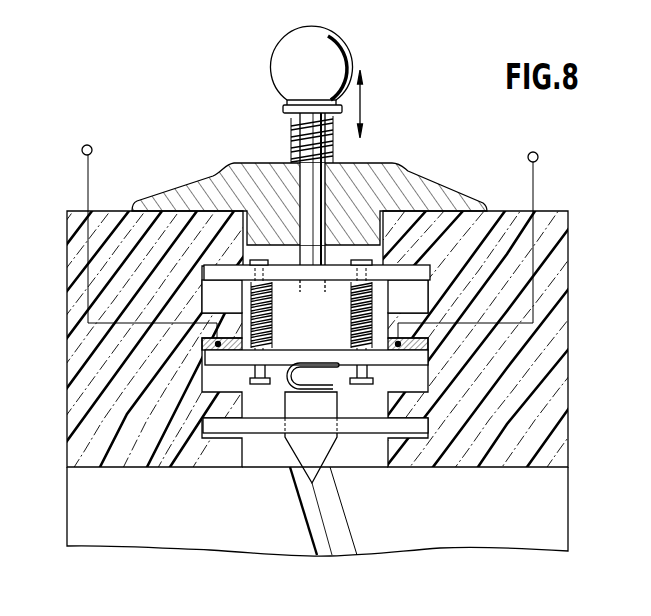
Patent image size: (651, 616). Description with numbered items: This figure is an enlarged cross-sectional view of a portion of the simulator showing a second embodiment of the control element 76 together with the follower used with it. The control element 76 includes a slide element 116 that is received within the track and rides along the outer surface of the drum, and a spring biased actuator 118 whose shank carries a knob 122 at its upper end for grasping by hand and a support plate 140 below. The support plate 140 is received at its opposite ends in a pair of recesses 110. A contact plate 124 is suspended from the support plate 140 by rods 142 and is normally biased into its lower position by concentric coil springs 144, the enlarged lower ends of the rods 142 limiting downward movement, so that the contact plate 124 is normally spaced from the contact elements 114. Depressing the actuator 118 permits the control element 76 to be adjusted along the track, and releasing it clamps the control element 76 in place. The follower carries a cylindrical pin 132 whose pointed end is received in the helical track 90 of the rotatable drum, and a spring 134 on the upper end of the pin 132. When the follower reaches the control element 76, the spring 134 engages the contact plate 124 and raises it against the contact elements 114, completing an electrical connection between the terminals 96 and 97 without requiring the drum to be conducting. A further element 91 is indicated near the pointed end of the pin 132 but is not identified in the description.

The knob 122 is at (340, 40).
The actuator 118 is at (250, 103).
The control element 76 is at (412, 122).
The slide element 116 is at (427, 184).
The terminal 97 is at (82, 150).
The output terminal 96 is at (538, 156).
The recesses 110 is at (205, 288).
The support plate 140 is at (288, 272).
The rods 142 is at (352, 320).
The concentric coil springs 144 is at (352, 335).
The contact elements 114 is at (200, 345).
The contact plate 124 is at (387, 364).
The spring 134 is at (291, 376).
The cylindrical pin 132 is at (322, 413).
The pin tip 91 is at (281, 456).
The helical track 90 is at (318, 526).